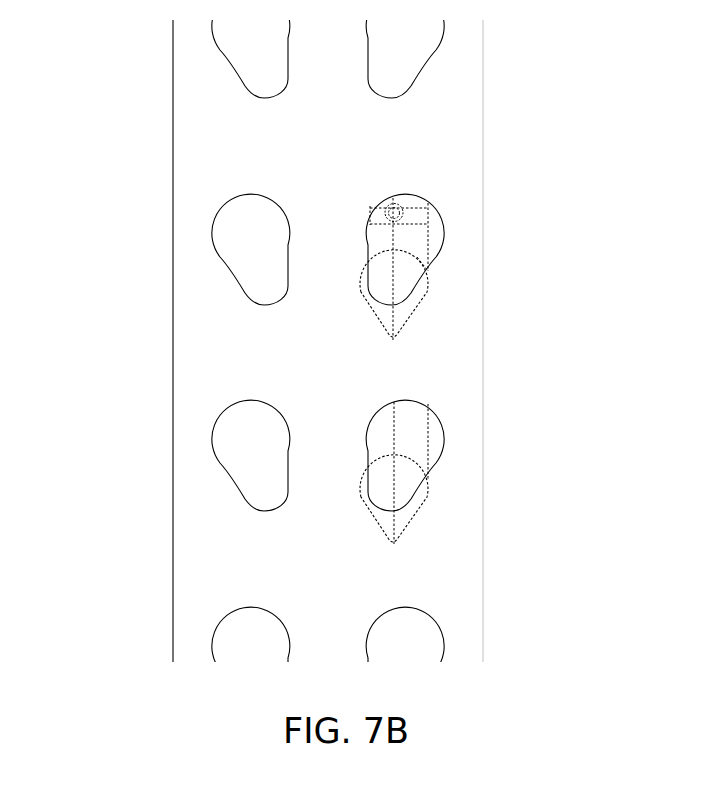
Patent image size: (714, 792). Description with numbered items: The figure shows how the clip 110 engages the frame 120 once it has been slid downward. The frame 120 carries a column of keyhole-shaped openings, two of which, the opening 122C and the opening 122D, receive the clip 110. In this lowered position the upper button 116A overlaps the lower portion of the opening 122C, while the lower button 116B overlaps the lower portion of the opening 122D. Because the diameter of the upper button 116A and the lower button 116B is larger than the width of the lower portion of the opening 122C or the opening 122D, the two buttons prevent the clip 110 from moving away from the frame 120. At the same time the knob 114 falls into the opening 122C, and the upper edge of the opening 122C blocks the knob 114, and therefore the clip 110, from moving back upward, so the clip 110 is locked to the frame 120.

The clip 110 is at (410, 418).
The knob 114 is at (405, 208).
The upper button 116A is at (413, 258).
The lower button 116B is at (413, 463).
The frame 120 is at (210, 357).
The opening 122C is at (445, 232).
The opening 122D is at (443, 432).